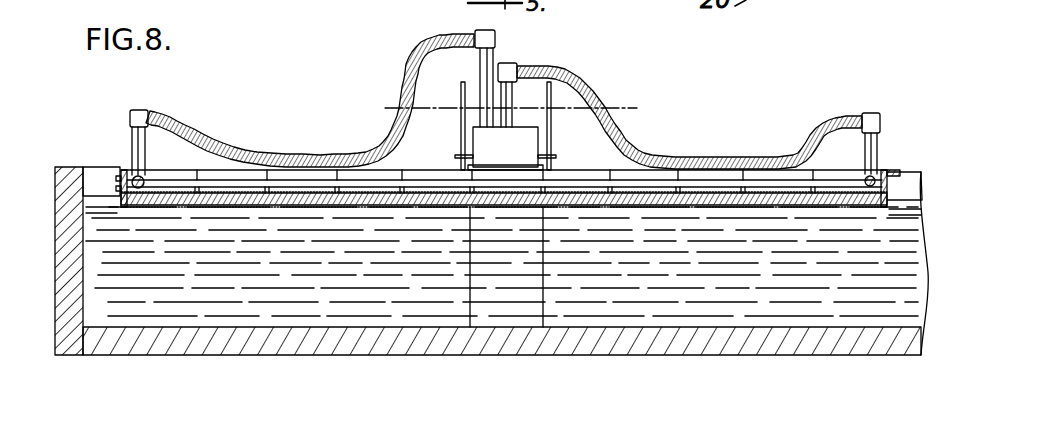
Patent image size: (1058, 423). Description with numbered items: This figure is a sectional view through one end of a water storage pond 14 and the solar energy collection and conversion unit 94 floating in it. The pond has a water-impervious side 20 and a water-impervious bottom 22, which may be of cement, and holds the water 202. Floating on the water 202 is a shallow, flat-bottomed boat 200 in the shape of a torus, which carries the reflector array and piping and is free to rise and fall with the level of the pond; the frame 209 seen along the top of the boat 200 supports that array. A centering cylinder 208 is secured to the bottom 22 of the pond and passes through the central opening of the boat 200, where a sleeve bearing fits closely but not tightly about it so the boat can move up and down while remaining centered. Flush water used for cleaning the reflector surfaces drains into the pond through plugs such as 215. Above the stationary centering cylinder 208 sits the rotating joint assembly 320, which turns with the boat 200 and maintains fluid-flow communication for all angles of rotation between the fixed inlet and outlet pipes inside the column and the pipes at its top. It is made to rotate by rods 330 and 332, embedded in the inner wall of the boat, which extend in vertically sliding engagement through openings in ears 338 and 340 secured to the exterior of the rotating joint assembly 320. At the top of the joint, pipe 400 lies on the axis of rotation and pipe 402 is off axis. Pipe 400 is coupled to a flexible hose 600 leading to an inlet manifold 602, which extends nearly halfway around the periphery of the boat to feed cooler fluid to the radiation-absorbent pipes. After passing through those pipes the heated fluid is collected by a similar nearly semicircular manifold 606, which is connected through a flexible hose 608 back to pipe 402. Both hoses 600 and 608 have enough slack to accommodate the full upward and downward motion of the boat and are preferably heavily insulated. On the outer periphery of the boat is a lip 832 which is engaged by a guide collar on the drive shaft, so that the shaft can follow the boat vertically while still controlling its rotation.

The water storage pond 14 is at (70, 166).
The pond side 20 is at (57, 186).
The pond bottom 22 is at (243, 347).
The solar energy collection and conversion unit 94 is at (121, 165).
The boat 200 is at (878, 206).
The water 202 is at (905, 200).
The centering cylinder 208 is at (470, 300).
The float frame 209 is at (238, 176).
The plug 215 is at (118, 189).
The rotating joint assembly 320 is at (524, 157).
The rod 330 is at (552, 141).
The rod 332 is at (462, 122).
The ear 338 is at (557, 156).
The ear 340 is at (455, 156).
The pipe 400 is at (517, 88).
The pipe 402 is at (480, 62).
The flexible hose 600 is at (722, 158).
The inlet manifold 602 is at (876, 178).
The manifold 606 is at (140, 177).
The flexible hose 608 is at (318, 158).
The lip 832 is at (899, 172).